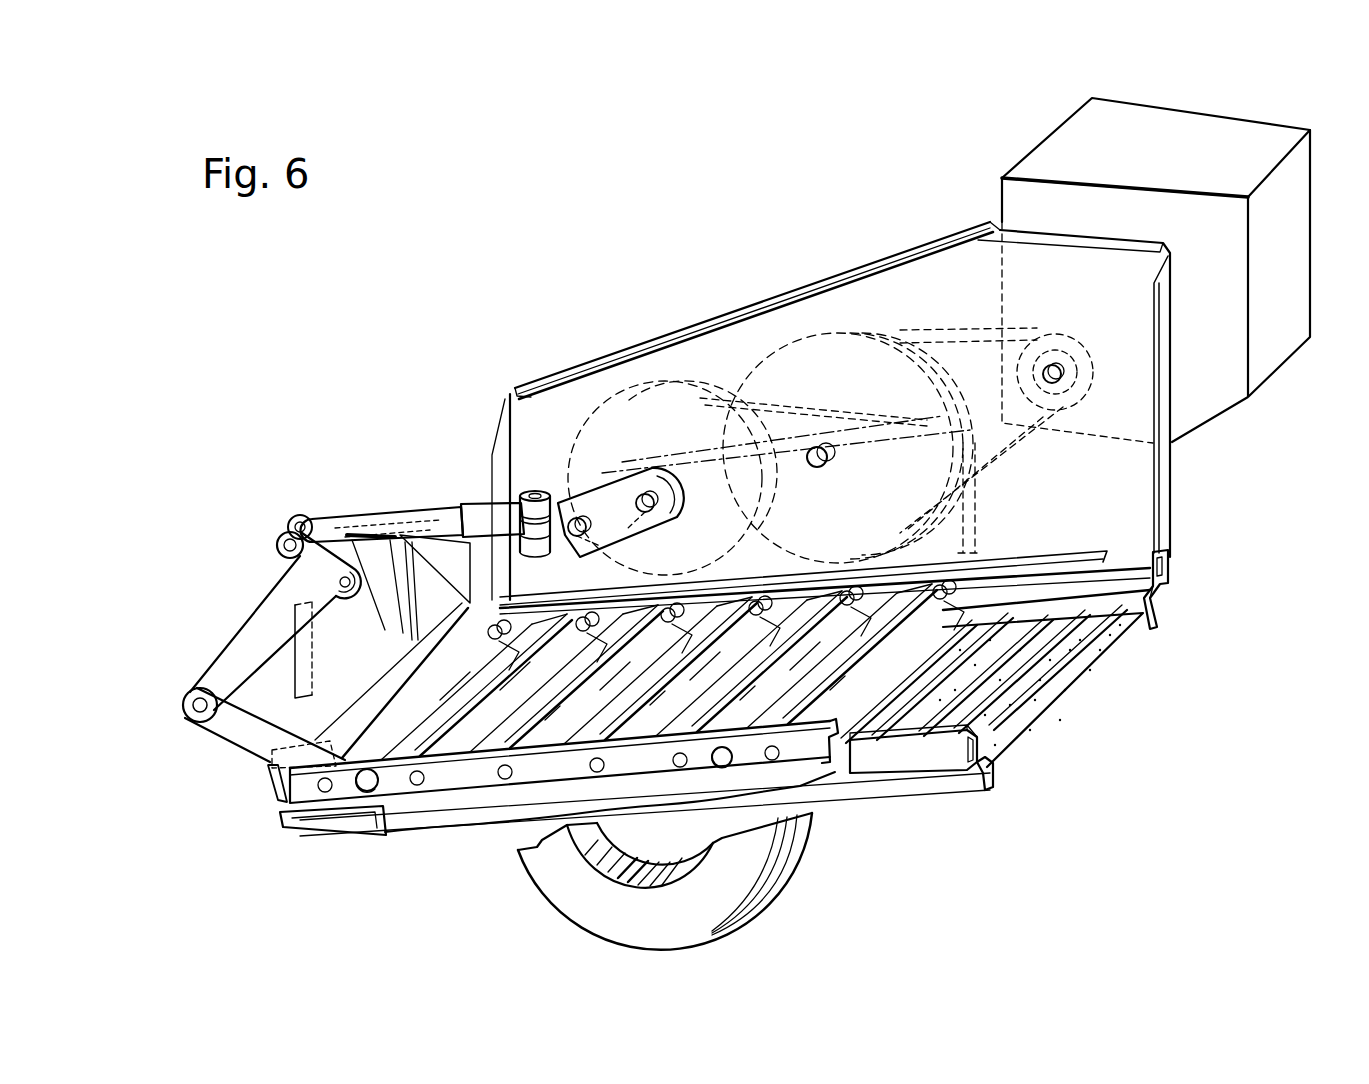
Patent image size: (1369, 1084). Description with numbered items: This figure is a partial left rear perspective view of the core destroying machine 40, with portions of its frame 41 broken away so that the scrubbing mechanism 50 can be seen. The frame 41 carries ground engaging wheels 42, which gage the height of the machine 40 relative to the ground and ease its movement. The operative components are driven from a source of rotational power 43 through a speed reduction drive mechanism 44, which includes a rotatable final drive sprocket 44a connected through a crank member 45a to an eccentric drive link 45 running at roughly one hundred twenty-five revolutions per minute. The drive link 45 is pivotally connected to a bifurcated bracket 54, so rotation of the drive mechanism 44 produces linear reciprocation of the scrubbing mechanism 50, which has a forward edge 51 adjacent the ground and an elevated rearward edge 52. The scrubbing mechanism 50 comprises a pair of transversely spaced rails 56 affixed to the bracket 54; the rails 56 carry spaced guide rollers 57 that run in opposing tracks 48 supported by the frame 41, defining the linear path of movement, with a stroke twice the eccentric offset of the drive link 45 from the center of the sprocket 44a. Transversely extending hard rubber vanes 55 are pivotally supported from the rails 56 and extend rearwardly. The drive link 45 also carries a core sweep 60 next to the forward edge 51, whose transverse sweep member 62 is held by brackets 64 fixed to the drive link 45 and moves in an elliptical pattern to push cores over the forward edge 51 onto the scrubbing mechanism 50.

The core destroying machine 40 is at (447, 287).
The frame 41 is at (1162, 597).
The ground engaging wheels 42 is at (787, 892).
The source of rotational power 43 is at (1040, 142).
The speed reduction drive mechanism 44 is at (740, 268).
The final drive sprocket 44a is at (622, 391).
The eccentric drive link 45 is at (390, 527).
The crank member 45a is at (628, 511).
The tracks 48 is at (897, 732).
The scrubbing mechanism 50 is at (1125, 694).
The forward edge 51 is at (273, 815).
The rearward edge 52 is at (1097, 667).
The bifurcated bracket 54 is at (238, 722).
The vanes 55 is at (447, 690).
The rails 56 is at (813, 752).
The guide rollers 57 is at (370, 790).
The core sweep 60 is at (293, 680).
The sweep member 62 is at (267, 778).
The brackets 64 is at (337, 586).